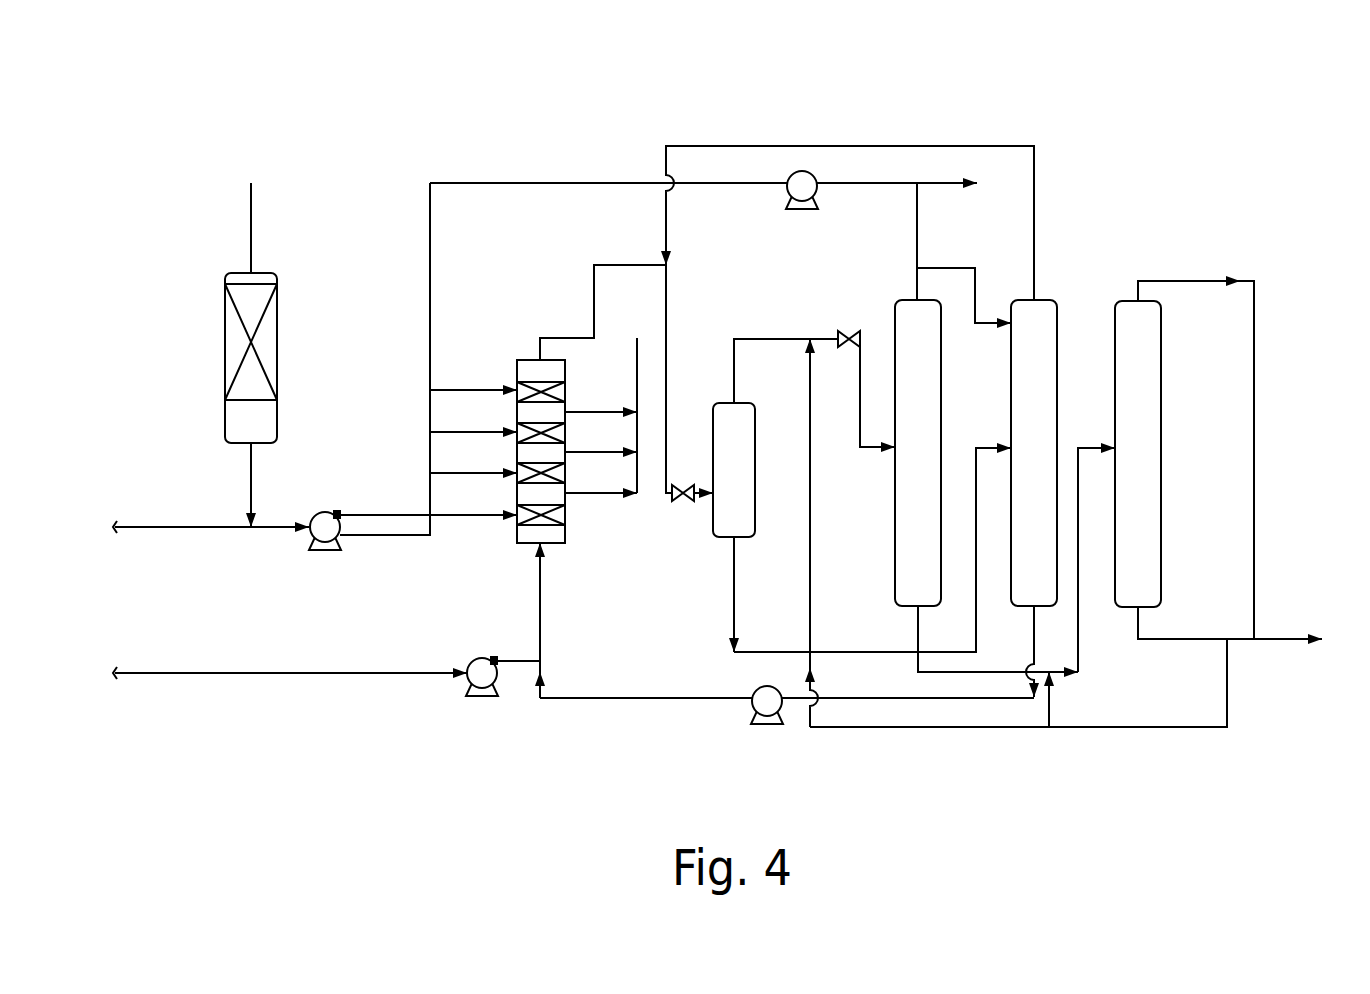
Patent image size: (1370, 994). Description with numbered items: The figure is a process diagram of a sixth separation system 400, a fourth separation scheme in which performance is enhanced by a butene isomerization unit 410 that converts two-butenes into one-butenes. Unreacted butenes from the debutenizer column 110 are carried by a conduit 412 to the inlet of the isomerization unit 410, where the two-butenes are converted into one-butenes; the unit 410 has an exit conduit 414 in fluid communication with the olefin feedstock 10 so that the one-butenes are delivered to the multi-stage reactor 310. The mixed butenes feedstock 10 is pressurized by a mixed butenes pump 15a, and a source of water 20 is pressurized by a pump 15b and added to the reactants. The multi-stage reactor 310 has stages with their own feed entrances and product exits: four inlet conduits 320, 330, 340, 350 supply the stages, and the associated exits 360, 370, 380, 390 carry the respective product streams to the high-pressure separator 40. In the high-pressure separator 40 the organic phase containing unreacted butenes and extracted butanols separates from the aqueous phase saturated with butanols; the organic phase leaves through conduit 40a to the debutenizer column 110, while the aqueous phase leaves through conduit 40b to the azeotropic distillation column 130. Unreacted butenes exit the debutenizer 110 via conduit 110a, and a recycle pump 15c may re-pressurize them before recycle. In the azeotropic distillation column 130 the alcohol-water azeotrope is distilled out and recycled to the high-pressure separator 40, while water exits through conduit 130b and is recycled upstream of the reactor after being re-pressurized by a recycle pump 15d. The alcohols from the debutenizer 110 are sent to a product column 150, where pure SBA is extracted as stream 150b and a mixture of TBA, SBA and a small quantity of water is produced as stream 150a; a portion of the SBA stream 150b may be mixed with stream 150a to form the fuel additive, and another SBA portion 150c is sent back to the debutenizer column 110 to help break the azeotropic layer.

The sixth separation system 400 is at (245, 112).
The conduit 412 is at (228, 228).
The isomerization unit 410 is at (272, 436).
The exit conduit 414 is at (229, 485).
The feedstock 10 is at (211, 542).
The mixed butenes pump 15a is at (369, 515).
The source of water 20 is at (290, 687).
The pump 15b is at (501, 693).
The multi-stage reactor 310 is at (524, 431).
The inlet conduit 320 is at (473, 373).
The inlet conduit 330 is at (473, 415).
The inlet conduit 340 is at (473, 456).
The inlet conduit 350 is at (473, 498).
The exit 360 is at (603, 312).
The exit 370 is at (601, 396).
The exit 380 is at (601, 436).
The exit 390 is at (601, 477).
The recycle pump 15c is at (801, 207).
The conduit 110a is at (938, 253).
The conduit 40a is at (814, 389).
The high-pressure separator 40 is at (746, 529).
The conduit 40b is at (872, 550).
The debutenizer column 110 is at (937, 529).
The azeotropic distillation column 130 is at (1054, 529).
The product column 150 is at (1157, 529).
The conduit 130b is at (1008, 651).
The TBA, SBA and water mixture stream 150a is at (1196, 444).
The SBA stream 150b is at (1230, 641).
The SBA stream portion 150c is at (1018, 683).
The recycle pump 15d is at (768, 726).